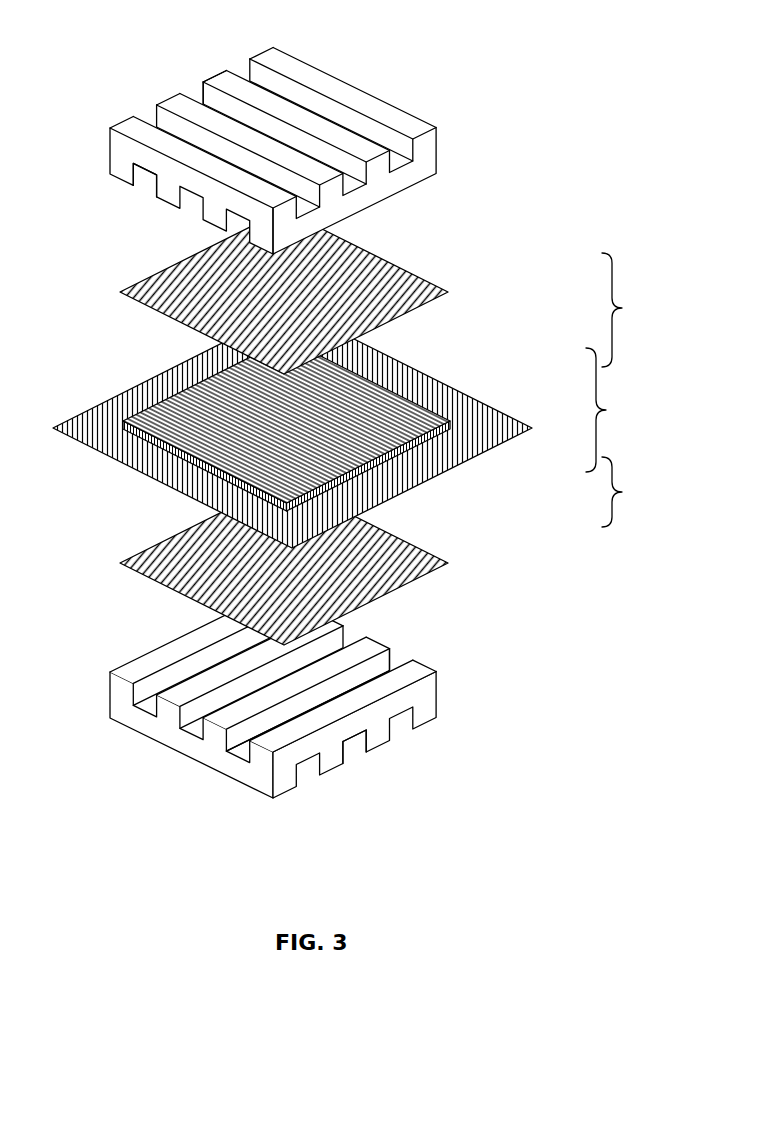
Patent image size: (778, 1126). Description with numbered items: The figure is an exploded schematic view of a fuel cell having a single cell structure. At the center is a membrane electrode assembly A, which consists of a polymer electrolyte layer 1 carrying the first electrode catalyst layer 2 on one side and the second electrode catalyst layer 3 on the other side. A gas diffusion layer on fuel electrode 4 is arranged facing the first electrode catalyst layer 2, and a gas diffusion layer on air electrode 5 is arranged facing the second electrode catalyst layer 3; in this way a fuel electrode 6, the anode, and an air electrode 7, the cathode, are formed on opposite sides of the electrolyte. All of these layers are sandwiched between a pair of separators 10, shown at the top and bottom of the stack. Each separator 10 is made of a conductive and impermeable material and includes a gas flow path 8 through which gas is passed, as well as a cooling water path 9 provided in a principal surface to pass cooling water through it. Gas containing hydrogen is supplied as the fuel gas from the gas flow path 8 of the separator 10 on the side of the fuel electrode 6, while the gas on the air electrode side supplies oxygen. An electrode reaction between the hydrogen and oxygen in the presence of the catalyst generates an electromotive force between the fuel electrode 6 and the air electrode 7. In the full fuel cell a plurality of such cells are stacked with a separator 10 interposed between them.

The polymer electrolyte layer 1 is at (497, 438).
The first electrode catalyst layer 2 is at (440, 414).
The second electrode catalyst layer 3 is at (340, 485).
The gas diffusion layer on fuel electrode 4 is at (402, 295).
The gas diffusion layer on air electrode 5 is at (397, 567).
The fuel electrode 6 is at (627, 310).
The air electrode 7 is at (622, 492).
The gas flow path 8 is at (150, 183).
The cooling water path 9 is at (197, 83).
The separator 10 is at (317, 423).
The membrane electrode assembly A is at (610, 410).